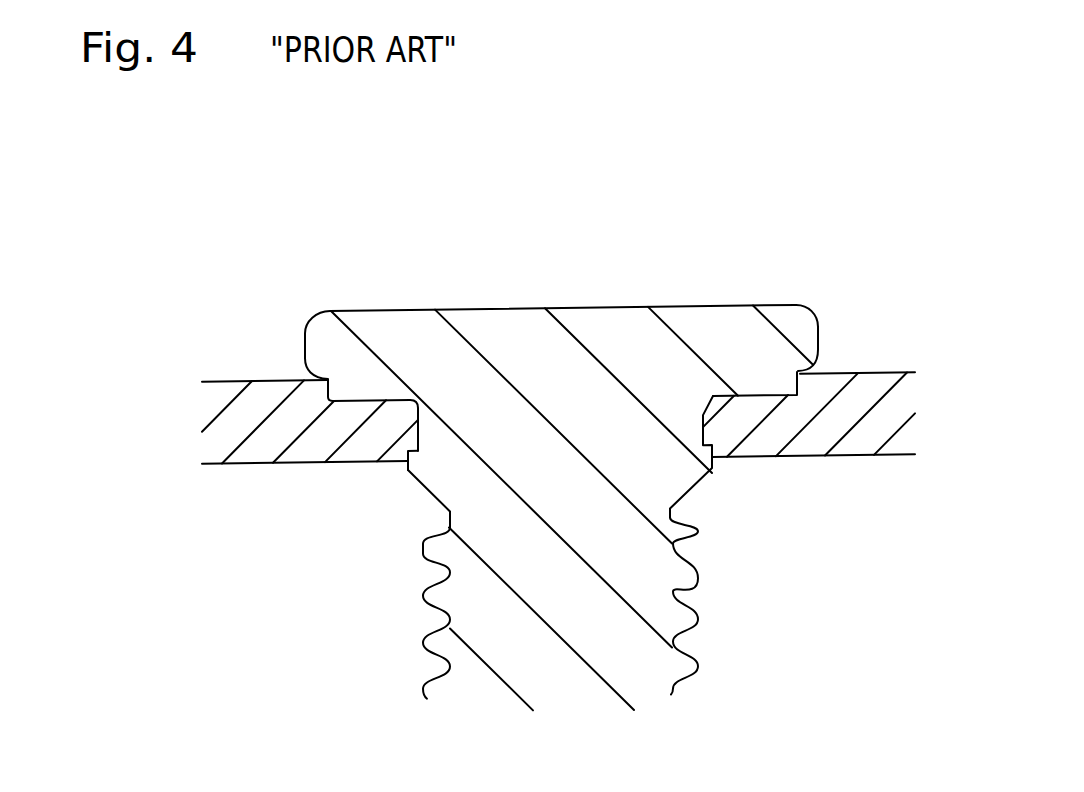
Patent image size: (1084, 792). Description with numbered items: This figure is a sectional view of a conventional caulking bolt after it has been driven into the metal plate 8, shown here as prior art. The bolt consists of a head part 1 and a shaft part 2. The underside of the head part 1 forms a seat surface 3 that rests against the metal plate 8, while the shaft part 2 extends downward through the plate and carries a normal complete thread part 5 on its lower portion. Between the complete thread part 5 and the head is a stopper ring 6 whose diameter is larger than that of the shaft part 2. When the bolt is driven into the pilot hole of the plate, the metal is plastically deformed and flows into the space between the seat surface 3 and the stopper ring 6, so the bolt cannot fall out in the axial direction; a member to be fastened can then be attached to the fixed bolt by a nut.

The head part 1 is at (565, 308).
The shaft part 2 is at (627, 619).
The seat surface 3 is at (760, 398).
The complete thread part 5 is at (423, 592).
The stopper ring 6 is at (413, 462).
The metal plate 8 is at (875, 377).